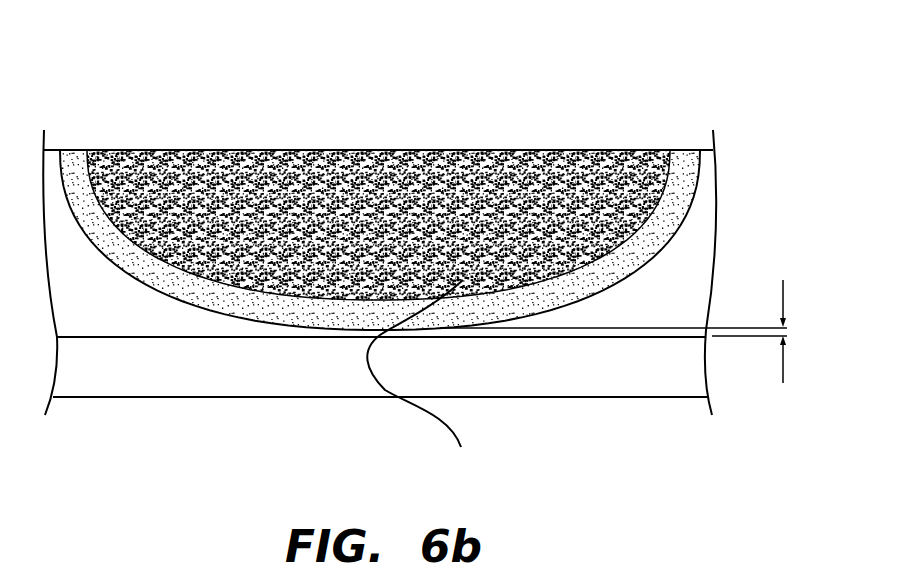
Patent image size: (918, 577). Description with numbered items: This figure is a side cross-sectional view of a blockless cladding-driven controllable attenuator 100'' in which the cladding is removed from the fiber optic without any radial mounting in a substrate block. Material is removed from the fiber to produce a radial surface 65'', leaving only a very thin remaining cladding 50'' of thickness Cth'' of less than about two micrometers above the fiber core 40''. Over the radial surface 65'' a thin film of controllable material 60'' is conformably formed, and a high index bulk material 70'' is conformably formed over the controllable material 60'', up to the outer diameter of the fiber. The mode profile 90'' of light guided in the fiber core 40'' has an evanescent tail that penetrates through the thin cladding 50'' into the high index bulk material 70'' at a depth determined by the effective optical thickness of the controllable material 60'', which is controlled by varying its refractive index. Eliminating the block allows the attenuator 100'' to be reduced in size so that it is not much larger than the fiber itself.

The blockless cladding-driven controllable attenuator 100'' is at (379, 220).
The controllable material 60'' is at (380, 265).
The bulk material 70'' is at (378, 184).
The radial surface 65'' is at (380, 240).
The cladding 50'' is at (422, 394).
The mode profile 90'' is at (371, 363).
The fiber core 40'' is at (380, 411).
The cladding thickness Cth'' is at (824, 319).